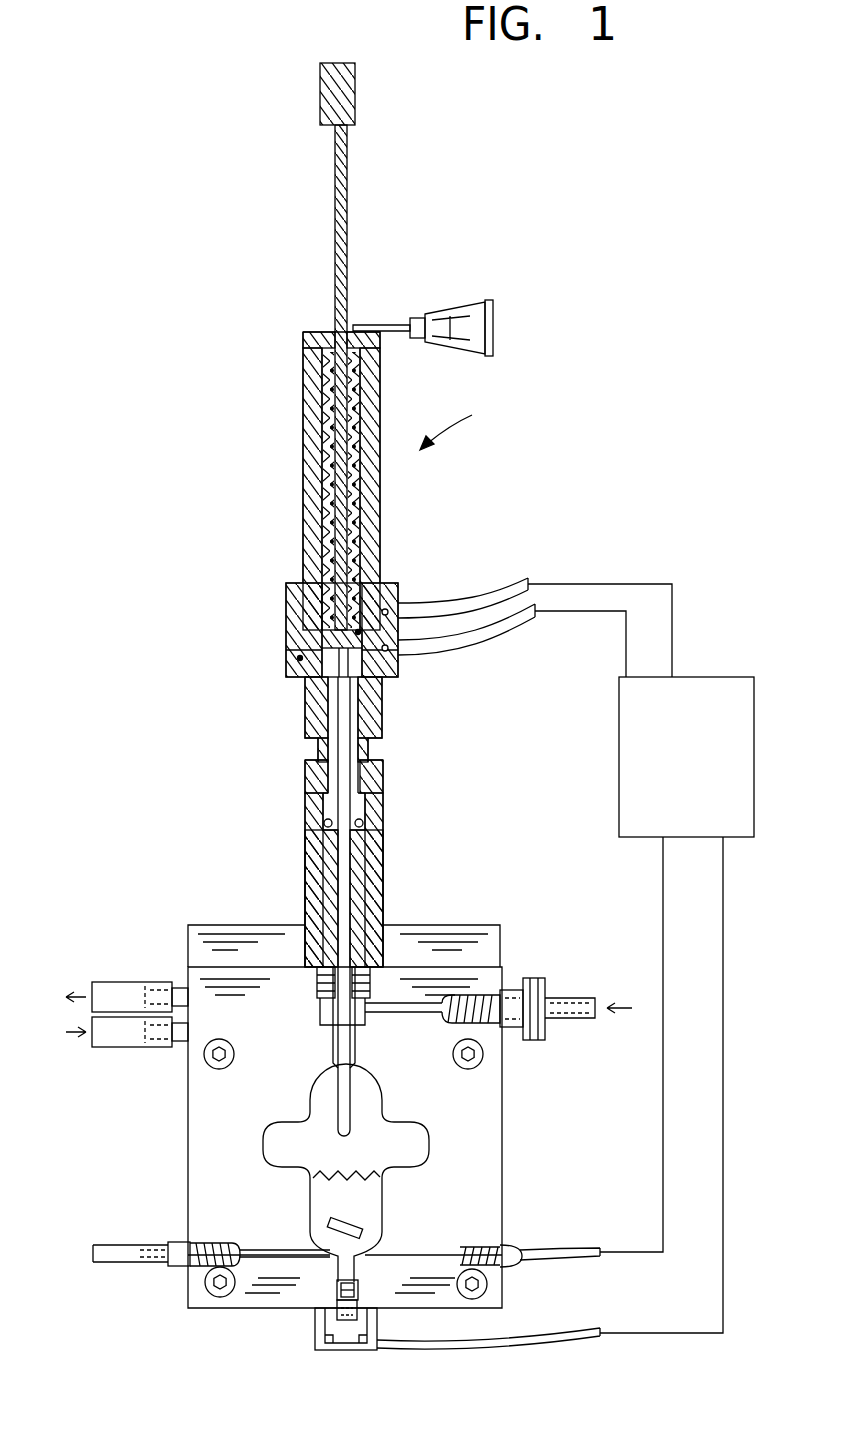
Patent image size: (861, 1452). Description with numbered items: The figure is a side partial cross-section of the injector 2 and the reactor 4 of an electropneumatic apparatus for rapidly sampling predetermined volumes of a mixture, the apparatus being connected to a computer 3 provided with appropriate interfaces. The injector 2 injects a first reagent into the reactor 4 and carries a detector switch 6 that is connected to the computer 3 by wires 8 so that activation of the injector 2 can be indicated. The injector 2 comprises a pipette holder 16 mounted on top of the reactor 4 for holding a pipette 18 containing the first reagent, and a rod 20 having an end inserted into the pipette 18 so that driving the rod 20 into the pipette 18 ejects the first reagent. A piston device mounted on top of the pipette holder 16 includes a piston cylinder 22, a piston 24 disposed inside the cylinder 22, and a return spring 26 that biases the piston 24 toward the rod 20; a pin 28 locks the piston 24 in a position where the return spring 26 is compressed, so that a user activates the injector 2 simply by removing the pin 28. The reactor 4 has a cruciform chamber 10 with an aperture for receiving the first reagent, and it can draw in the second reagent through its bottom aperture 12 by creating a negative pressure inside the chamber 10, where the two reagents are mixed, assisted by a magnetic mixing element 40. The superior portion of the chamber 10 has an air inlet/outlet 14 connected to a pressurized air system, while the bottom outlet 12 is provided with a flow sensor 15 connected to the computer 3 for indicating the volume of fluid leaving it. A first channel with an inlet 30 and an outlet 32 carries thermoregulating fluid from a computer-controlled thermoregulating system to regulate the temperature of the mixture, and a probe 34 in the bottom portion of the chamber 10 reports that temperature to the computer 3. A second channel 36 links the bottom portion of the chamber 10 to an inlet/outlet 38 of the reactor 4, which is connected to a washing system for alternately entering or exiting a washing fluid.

The injector 2 is at (455, 421).
The computer 3 is at (630, 737).
The reactor 4 is at (492, 1105).
The detector switch 6 is at (290, 606).
The wires 8 is at (505, 632).
The chamber 10 is at (304, 1151).
The bottom aperture 12 is at (335, 1283).
The air inlet/outlet 14 is at (545, 985).
The flow sensor 15 is at (357, 1350).
The pipette holder 16 is at (385, 812).
The pipette 18 is at (338, 1087).
The rod 20 is at (335, 691).
The piston cylinder 22 is at (305, 440).
The piston 24 is at (335, 205).
The return spring 26 is at (320, 384).
The pin 28 is at (397, 326).
The inlet 30 is at (117, 1040).
The outlet 32 is at (124, 990).
The probe 34 is at (372, 1252).
The second channel 36 is at (262, 1252).
The inlet/outlet 38 is at (117, 1258).
The magnetic mixing element 40 is at (340, 1222).